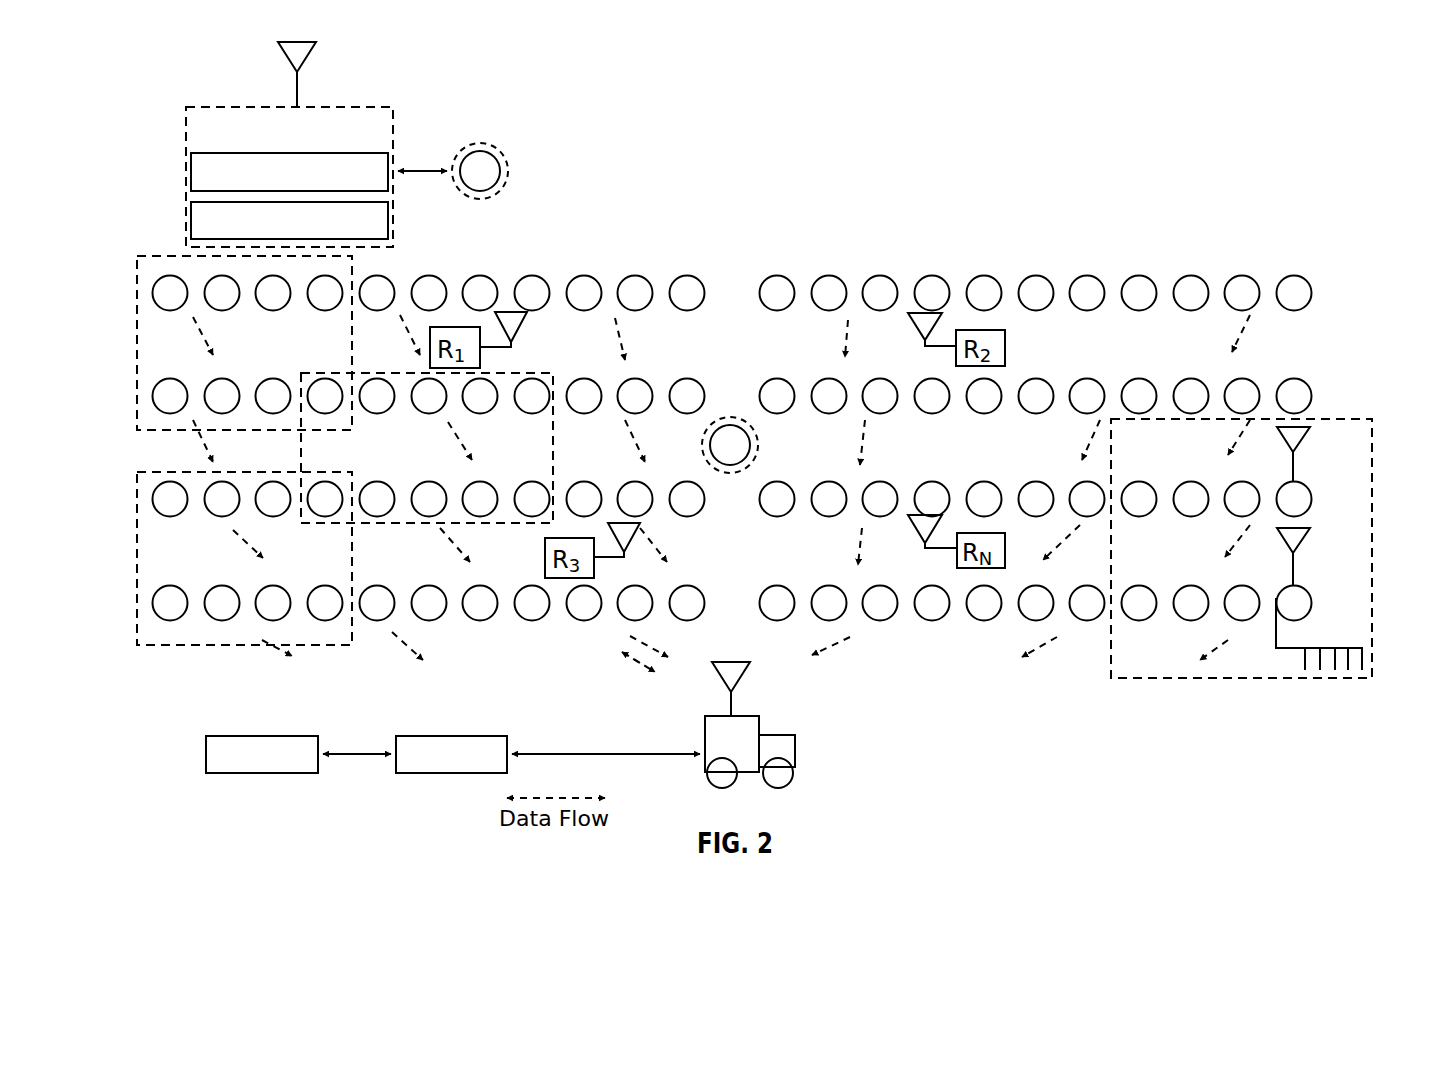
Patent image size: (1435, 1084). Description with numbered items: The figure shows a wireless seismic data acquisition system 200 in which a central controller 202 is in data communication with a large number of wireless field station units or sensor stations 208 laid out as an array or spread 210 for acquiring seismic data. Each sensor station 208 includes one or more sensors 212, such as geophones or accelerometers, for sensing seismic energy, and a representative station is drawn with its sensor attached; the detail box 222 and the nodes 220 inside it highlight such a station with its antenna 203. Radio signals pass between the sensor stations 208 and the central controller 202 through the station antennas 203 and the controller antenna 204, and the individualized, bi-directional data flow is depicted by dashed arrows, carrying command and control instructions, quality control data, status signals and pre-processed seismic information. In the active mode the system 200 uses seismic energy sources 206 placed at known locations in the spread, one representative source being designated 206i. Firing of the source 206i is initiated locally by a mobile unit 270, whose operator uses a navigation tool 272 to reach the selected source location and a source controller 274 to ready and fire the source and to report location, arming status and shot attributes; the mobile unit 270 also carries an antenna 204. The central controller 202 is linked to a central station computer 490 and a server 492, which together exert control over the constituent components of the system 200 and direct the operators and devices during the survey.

The wireless seismic data acquisition system 200 is at (1010, 674).
The central controller 202 is at (795, 750).
The antenna 203 is at (1300, 448).
The antenna 204 is at (305, 42).
The seismic energy source 206 is at (758, 437).
The representative seismic energy source 206i is at (500, 153).
The wireless field station unit 208 is at (1284, 280).
The array 210 is at (1143, 256).
The sensor 212 is at (1362, 670).
The node 220 is at (1312, 500).
The block 222 is at (1338, 421).
The mobile unit 270 is at (365, 107).
The navigation tool 272 is at (191, 165).
The source controller 274 is at (191, 212).
The CSC 490 is at (424, 736).
The server 492 is at (218, 736).